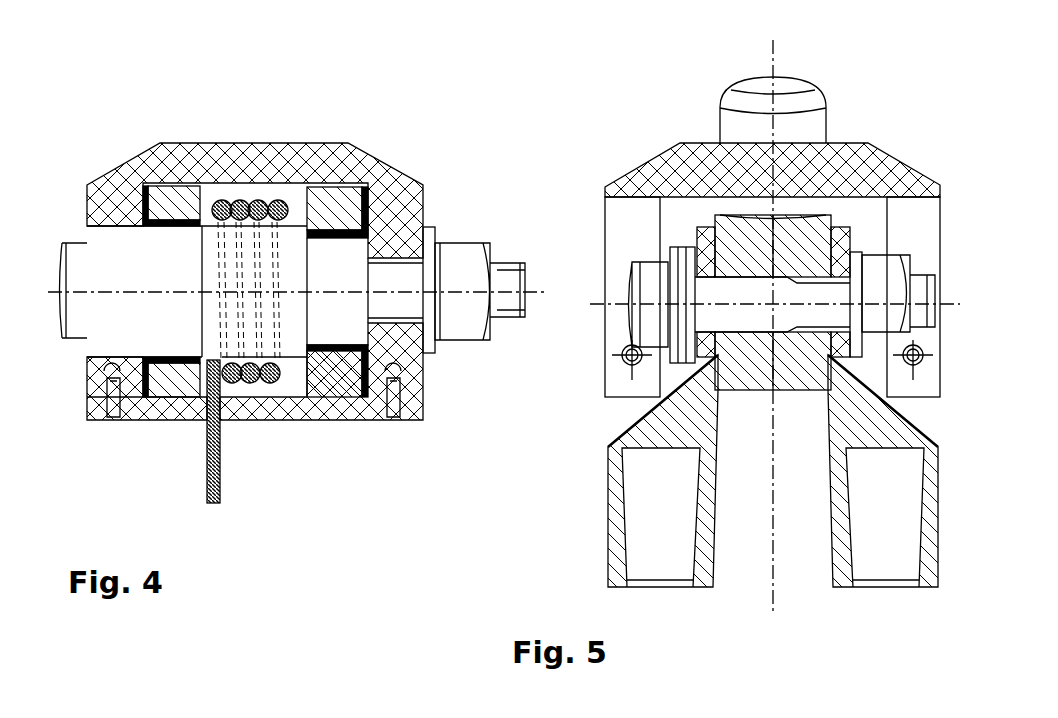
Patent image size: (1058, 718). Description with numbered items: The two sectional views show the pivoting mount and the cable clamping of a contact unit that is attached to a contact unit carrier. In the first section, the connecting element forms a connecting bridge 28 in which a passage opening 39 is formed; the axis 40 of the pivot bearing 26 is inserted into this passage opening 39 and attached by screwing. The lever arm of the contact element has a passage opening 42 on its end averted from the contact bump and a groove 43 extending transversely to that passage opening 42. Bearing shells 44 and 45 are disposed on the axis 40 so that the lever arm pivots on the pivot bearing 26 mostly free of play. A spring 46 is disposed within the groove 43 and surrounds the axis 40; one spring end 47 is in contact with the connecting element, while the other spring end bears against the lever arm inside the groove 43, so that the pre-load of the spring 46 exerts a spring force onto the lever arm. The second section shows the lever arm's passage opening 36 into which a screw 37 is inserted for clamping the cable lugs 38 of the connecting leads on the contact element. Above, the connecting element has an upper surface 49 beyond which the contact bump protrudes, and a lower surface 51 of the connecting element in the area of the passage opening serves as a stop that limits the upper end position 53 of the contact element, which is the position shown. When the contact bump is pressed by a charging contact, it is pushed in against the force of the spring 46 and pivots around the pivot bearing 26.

In FIG. 4, the pivot bearing 26 is at (445, 222).
In FIG. 4, the connecting bridge 28 is at (212, 150).
In FIG. 5, the passage opening 36 is at (700, 207).
In FIG. 5, the screw 37 is at (717, 313).
In FIG. 5, the cable lugs 38 is at (700, 450).
In FIG. 4, the passage opening 39 is at (74, 222).
In FIG. 4, the axis 40 is at (157, 320).
In FIG. 4, the passage opening 42 is at (370, 208).
In FIG. 4, the groove 43 is at (253, 186).
In FIG. 4, the bearing shell 44 is at (164, 193).
In FIG. 4, the bearing shell 45 is at (323, 192).
In FIG. 4, the spring 46 is at (255, 385).
In FIG. 4, the spring end 47 is at (220, 500).
In FIG. 5, the upper surface 49 is at (843, 143).
In FIG. 5, the lower surface 51 is at (705, 252).
In FIG. 5, the upper end position 53 is at (801, 68).